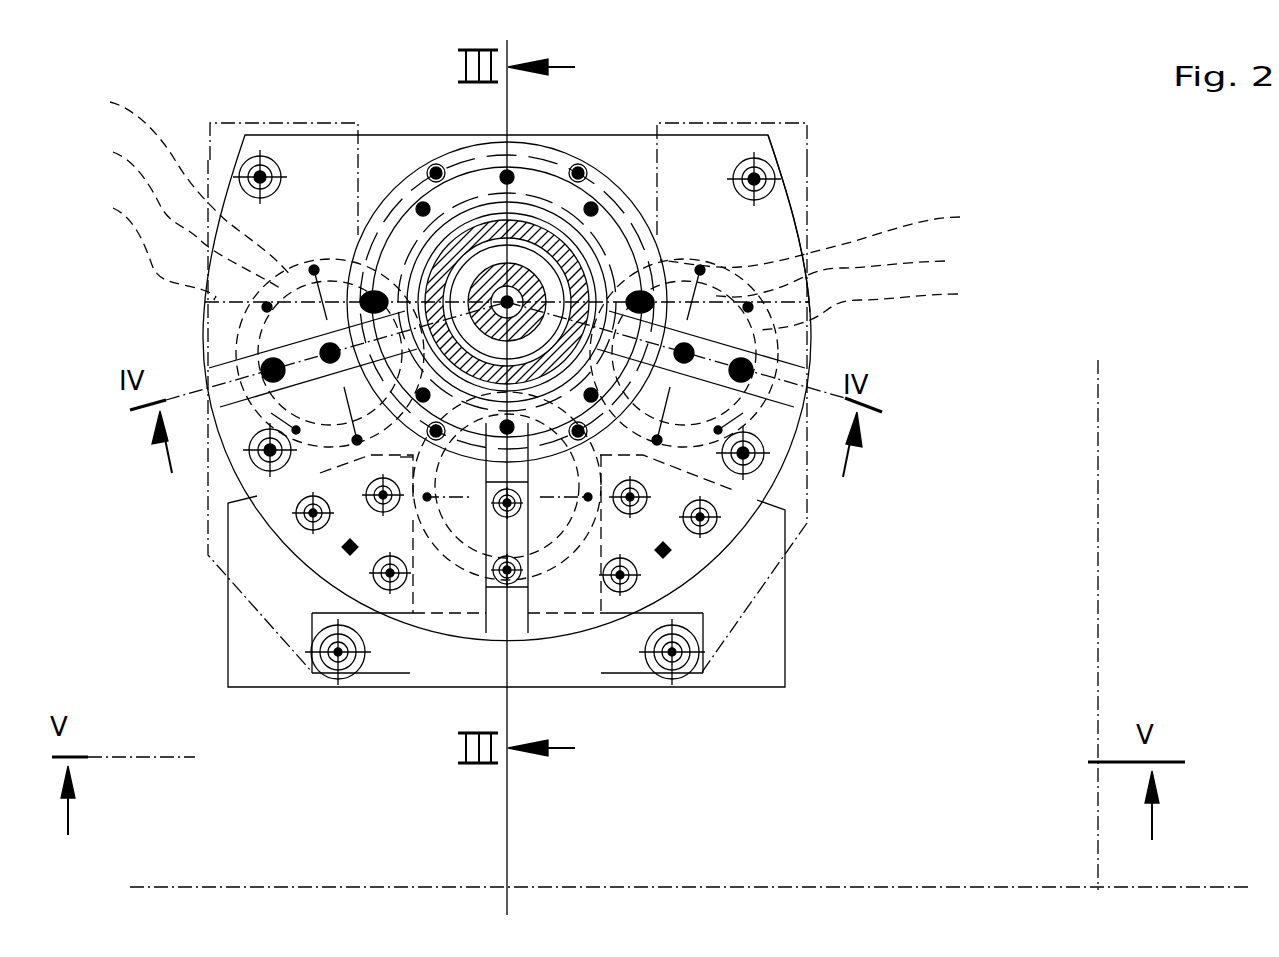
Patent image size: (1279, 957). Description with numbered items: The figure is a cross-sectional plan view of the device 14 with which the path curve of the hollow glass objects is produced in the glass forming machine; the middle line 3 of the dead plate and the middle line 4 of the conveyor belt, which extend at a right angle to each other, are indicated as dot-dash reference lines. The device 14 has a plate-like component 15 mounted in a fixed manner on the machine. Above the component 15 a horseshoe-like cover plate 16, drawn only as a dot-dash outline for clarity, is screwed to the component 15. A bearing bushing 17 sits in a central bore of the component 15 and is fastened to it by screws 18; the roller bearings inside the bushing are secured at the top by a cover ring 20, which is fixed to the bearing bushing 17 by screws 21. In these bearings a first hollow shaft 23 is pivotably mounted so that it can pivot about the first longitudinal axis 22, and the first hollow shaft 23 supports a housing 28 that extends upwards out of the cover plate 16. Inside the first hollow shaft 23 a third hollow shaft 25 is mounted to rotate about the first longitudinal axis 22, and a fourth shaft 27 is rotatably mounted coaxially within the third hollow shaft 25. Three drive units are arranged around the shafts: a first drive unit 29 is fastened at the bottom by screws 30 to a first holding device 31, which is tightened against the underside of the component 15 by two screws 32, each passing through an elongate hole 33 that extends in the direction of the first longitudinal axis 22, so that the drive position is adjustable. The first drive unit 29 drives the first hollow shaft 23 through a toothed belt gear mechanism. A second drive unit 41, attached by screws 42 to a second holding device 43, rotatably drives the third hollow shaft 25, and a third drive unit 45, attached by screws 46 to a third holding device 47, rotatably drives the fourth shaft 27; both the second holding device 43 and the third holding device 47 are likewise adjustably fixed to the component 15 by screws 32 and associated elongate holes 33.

The middle line 3 is at (1100, 398).
The middle line 4 is at (700, 887).
The device 14 is at (876, 187).
The plate-like component 15 is at (803, 188).
The cover plate 16 is at (808, 125).
The bearing bushing 17 is at (628, 212).
The screws 18 is at (610, 195).
The cover ring 20 is at (550, 185).
The screws 21 is at (620, 188).
The first longitudinal axis 22 is at (532, 243).
The first hollow shaft 23 is at (630, 235).
The third hollow shaft 25 is at (441, 302).
The fourth shaft 27 is at (552, 302).
The housing 28 is at (503, 228).
The first drive unit 29 is at (824, 235).
The screws 30 is at (842, 271).
The first holding device 31 is at (874, 305).
The screws 32 is at (273, 368).
The elongate hole 33 is at (522, 520).
The second drive unit 41 is at (187, 182).
The screws 42 is at (184, 215).
The second holding device 43 is at (150, 248).
The third drive unit 45 is at (450, 540).
The screws 46 is at (582, 590).
The third holding device 47 is at (459, 605).